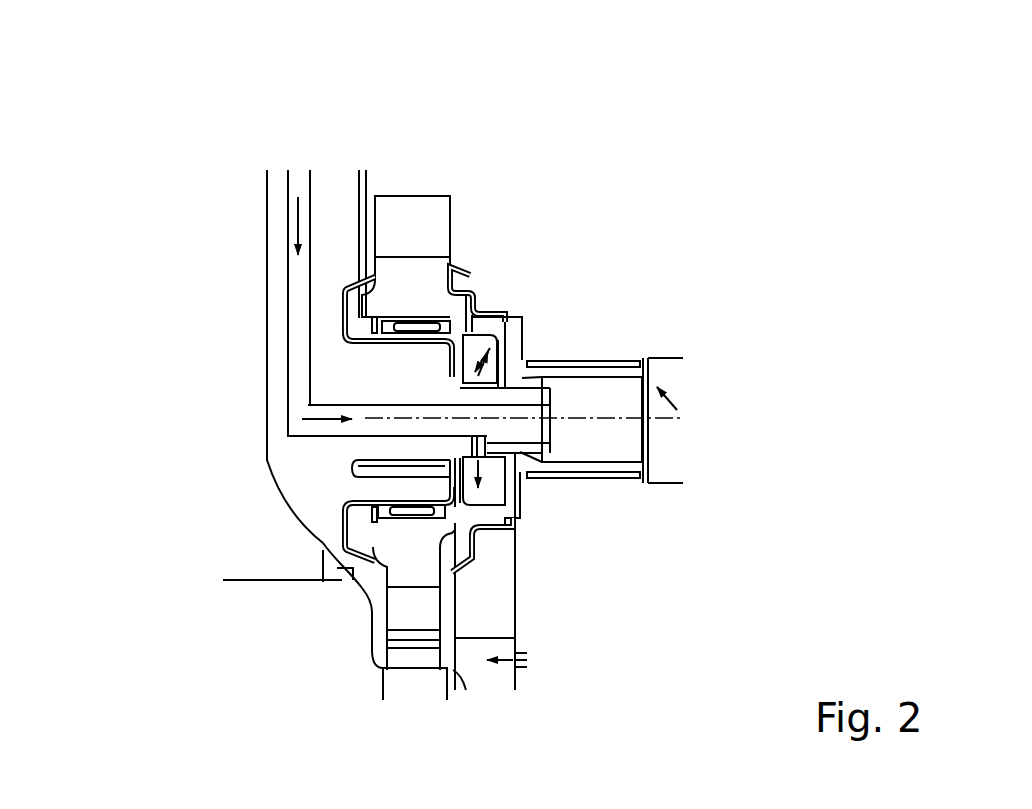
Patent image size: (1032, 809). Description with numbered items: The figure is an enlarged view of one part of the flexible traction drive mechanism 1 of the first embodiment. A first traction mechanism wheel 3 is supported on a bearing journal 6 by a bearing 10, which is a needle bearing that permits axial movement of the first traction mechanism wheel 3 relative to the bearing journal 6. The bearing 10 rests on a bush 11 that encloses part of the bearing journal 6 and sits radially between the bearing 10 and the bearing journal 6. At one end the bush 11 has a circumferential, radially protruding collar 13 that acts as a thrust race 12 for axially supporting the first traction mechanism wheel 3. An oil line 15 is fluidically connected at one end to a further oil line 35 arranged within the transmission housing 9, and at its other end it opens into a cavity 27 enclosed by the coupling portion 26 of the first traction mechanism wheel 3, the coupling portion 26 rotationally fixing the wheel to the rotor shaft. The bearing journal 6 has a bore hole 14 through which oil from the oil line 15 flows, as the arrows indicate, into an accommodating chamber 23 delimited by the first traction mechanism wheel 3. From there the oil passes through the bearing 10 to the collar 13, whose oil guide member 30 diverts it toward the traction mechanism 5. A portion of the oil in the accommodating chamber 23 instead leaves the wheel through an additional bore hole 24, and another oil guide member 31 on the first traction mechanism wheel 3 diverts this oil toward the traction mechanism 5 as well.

The flexible traction drive mechanism 1 is at (657, 193).
The first traction mechanism wheel 3 is at (383, 305).
The traction mechanism 5 is at (426, 210).
The bearing journal 6 is at (350, 367).
The transmission housing 9 is at (282, 217).
The bearing 10 is at (417, 333).
The bush 11 is at (366, 492).
The thrust race 12 is at (386, 278).
The collar 13 is at (340, 528).
The bore hole 14 is at (550, 443).
The oil line 15 is at (367, 428).
The accommodating chamber 23 is at (497, 355).
The additional bore hole 24 is at (472, 318).
The coupling portion 26 is at (580, 375).
The cavity 27 is at (632, 453).
The oil guide member 30 is at (368, 565).
The oil guide member 31 is at (478, 557).
The further oil line 35 is at (293, 282).